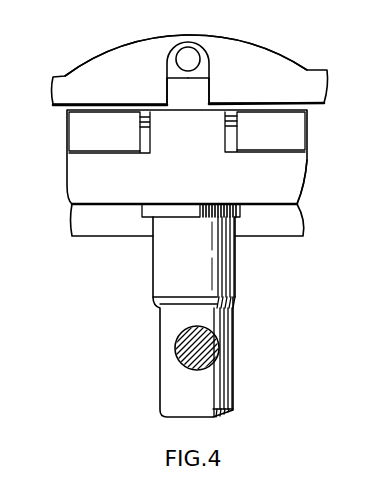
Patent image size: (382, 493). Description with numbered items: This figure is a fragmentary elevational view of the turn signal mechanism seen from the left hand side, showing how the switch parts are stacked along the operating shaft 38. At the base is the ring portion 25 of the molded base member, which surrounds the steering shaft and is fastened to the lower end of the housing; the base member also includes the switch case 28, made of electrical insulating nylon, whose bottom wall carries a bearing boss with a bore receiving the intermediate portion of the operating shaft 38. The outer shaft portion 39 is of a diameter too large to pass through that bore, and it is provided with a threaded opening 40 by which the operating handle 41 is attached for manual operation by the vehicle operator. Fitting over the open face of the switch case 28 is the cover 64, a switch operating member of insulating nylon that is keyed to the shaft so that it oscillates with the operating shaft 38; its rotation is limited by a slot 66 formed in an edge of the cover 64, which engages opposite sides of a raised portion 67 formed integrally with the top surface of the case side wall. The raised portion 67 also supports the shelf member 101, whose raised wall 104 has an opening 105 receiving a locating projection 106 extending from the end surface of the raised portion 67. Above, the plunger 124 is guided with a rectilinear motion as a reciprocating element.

The shelf member 101 is at (190, 57).
The raised wall 104 is at (152, 52).
The plunger 124 is at (185, 57).
The locating projection 106 is at (178, 93).
The opening 105 is at (203, 92).
The cover 64 is at (204, 157).
The slot 66 is at (234, 140).
The raised portion 67 is at (179, 152).
The switch case 28 is at (288, 186).
The ring portion 25 is at (304, 221).
The outer shaft portion 39 is at (236, 226).
The operating shaft 38 is at (190, 317).
The threaded opening 40 is at (187, 350).
The operating handle 41 is at (178, 344).